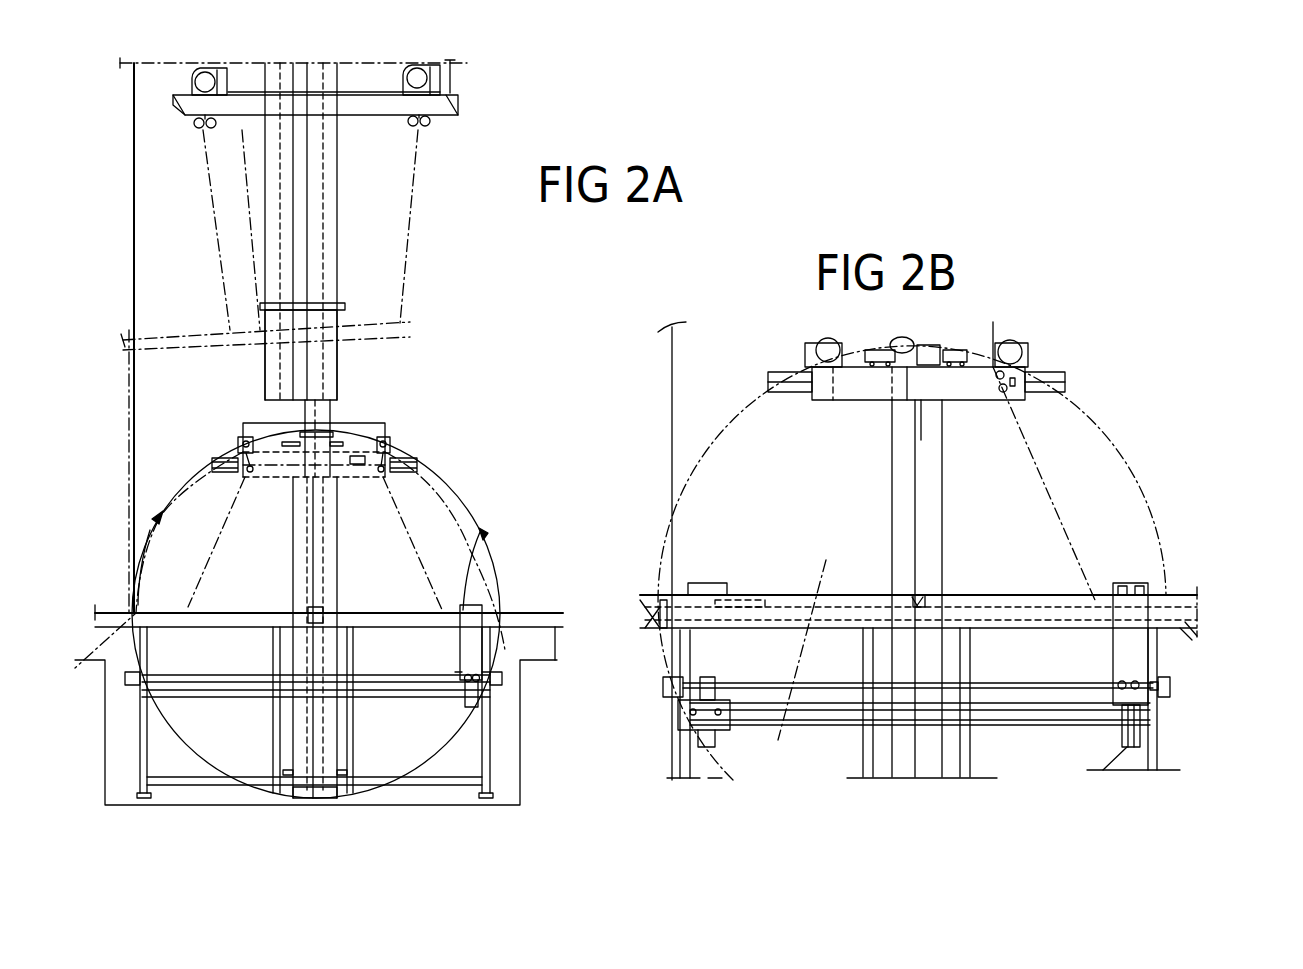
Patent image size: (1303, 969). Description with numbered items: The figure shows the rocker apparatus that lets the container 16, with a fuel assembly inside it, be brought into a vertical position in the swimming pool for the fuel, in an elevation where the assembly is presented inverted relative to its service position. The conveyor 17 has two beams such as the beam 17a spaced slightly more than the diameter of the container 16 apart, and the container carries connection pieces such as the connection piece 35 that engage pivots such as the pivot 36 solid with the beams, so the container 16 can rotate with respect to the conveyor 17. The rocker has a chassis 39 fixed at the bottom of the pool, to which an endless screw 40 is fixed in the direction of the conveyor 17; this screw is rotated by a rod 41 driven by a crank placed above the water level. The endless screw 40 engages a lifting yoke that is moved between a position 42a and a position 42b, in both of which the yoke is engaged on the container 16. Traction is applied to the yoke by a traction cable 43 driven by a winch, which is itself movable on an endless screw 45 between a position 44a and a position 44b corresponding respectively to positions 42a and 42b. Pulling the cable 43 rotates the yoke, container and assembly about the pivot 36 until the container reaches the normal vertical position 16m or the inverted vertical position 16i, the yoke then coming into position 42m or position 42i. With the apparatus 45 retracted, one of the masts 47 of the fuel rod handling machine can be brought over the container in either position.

In FIG. 2A, the container 16 is at (227, 617).
In FIG. 2B, the container 16 is at (1103, 632).
In FIG. 2A, the inverted vertical position of the container 16i is at (305, 437).
In FIG. 2A, the normal vertical position of the container 16m is at (328, 440).
In FIG. 2A, the conveyor 17 is at (517, 613).
In FIG. 2A, the beam 17a is at (548, 613).
In FIG. 2B, the beam 17a is at (1078, 625).
In FIG. 2B, the connection piece 35 is at (923, 600).
In FIG. 2B, the pivot 36 is at (915, 600).
In FIG. 2A, the chassis 39 is at (486, 755).
In FIG. 2A, the endless screw 40 is at (475, 690).
In FIG. 2B, the endless screw 40 is at (1140, 735).
In FIG. 2A, the rod 41 is at (132, 415).
In FIG. 2A, the position of the lifting yoke 42a is at (480, 530).
In FIG. 2A, the position of the lifting yoke 42b is at (128, 612).
In FIG. 2A, the position of the lifting yoke 42i is at (250, 463).
In FIG. 2A, the position of the lifting yoke 42m is at (357, 460).
In FIG. 2A, the traction cable 43 is at (400, 503).
In FIG. 2A, the position of the winch 44a is at (423, 74).
In FIG. 2A, the position of the winch 44b is at (193, 84).
In FIG. 2A, the endless screw 45 is at (370, 93).
In FIG. 2A, the mast 47 is at (280, 220).